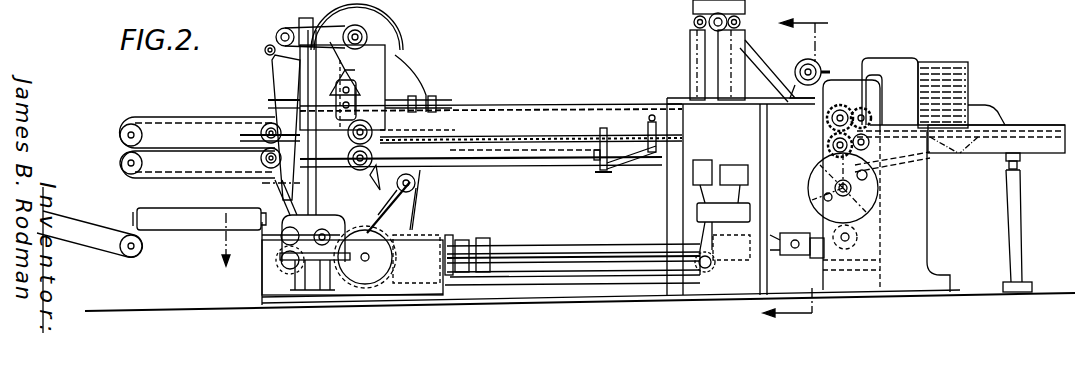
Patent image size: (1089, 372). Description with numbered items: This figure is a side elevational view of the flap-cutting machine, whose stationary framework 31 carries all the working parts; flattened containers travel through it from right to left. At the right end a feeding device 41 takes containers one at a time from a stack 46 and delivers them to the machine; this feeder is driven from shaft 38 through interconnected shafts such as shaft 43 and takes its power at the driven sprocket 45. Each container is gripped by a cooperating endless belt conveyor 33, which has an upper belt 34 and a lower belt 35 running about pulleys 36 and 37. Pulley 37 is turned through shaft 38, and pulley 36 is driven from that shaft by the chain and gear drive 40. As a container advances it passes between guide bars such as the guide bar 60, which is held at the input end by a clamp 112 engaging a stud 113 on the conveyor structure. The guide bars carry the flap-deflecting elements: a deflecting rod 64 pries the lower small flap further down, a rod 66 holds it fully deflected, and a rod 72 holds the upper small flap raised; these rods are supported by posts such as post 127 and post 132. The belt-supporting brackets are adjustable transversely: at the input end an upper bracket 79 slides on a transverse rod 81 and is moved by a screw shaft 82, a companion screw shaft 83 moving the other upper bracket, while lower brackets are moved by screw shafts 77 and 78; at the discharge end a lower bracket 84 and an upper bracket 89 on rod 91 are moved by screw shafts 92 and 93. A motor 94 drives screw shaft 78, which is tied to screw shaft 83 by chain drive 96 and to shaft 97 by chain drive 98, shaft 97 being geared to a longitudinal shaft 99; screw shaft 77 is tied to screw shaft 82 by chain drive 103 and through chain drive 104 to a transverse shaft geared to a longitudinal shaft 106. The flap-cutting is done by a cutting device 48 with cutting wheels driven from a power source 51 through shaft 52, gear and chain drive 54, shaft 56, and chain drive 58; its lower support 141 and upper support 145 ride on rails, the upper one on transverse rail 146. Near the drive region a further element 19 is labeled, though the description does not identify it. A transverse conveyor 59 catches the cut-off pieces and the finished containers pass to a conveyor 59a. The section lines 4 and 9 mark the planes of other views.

The section line 4- 4 is at (804, 170).
The section line 9- 9 is at (219, 241).
The drive motor 19 is at (823, 249).
The stationary framework 31 is at (565, 300).
The conveyor 33 is at (122, 152).
The upper belt 34 is at (502, 108).
The lower belt 35 is at (420, 184).
The pulley 36 is at (398, 28).
The pulley 37 is at (383, 296).
The shaft 38 is at (365, 253).
The chain and gear drive 40 is at (351, 135).
The feeding device 41 is at (928, 206).
The shaft 43 is at (604, 246).
The driven sprocket 45 is at (790, 235).
The stack 46 is at (953, 63).
The cutting device 48 is at (260, 155).
The power source 51 is at (281, 237).
The shaft 52 is at (281, 262).
The gear and chain drive 54 is at (262, 184).
The shaft 56 is at (284, 28).
The chain drive 58 is at (274, 69).
The transverse conveyor 59 is at (204, 229).
The conveyor 59a is at (66, 216).
The guide bar 60 is at (556, 137).
The deflecting rod 64 is at (636, 162).
The deflecting rod 66 is at (548, 164).
The deflecting rod 72 is at (452, 134).
The screw shaft 77 is at (727, 173).
The screw shaft 78 is at (732, 194).
The upper bracket 79 is at (703, 50).
The transverse rod 81 is at (728, 17).
The screw shaft 82 is at (741, 24).
The screw shaft 83 is at (695, 28).
The lower bracket 84 is at (320, 225).
The upper bracket 89 is at (404, 86).
The rod 91 is at (355, 25).
The screw shaft 92 is at (306, 23).
The screw shaft 93 is at (340, 43).
The motor 94 is at (690, 186).
The chain drive 96 is at (700, 86).
The shaft 97 is at (721, 261).
The chain drive 98 is at (712, 246).
The longitudinal shaft 99 is at (660, 272).
The chain drive 103 is at (772, 72).
The chain drive 104 is at (726, 220).
The longitudinal shaft 106 is at (530, 258).
The clamp 112 is at (283, 136).
The stud 113 is at (282, 158).
The post 127 is at (650, 120).
The post 132 is at (598, 160).
The lower support 141 is at (278, 194).
The upper support 145 is at (272, 100).
The transverse rail 146 is at (268, 45).